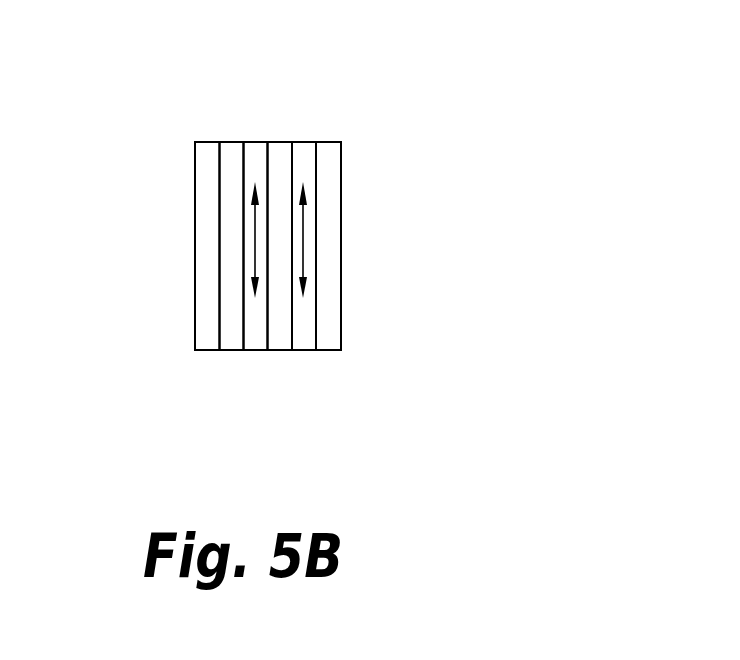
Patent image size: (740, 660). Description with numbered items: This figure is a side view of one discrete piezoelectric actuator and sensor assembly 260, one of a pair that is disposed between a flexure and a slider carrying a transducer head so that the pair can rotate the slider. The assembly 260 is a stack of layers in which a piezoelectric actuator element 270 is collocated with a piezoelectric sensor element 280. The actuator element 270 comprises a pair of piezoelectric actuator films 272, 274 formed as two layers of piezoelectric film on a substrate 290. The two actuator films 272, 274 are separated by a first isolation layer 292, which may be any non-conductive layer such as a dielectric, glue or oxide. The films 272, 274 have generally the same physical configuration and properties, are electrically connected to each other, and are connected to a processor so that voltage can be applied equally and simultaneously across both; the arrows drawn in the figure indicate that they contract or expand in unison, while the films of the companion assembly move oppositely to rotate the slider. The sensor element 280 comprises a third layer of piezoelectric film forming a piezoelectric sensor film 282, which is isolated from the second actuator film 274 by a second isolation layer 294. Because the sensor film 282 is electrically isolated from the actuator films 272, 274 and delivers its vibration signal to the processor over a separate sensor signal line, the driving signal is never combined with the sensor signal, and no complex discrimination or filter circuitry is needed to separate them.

The piezoelectric actuator and sensor assembly 260 is at (198, 100).
The piezoelectric actuator element 270 is at (254, 375).
The piezoelectric actuator film 272 is at (300, 141).
The piezoelectric actuator film 274 is at (255, 141).
The piezoelectric sensor element 280 is at (186, 174).
The piezoelectric sensor film 282 is at (195, 245).
The substrate 290 is at (328, 141).
The first isolation layer 292 is at (277, 352).
The second isolation layer 294 is at (232, 352).